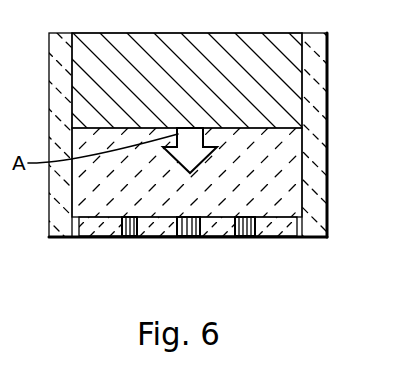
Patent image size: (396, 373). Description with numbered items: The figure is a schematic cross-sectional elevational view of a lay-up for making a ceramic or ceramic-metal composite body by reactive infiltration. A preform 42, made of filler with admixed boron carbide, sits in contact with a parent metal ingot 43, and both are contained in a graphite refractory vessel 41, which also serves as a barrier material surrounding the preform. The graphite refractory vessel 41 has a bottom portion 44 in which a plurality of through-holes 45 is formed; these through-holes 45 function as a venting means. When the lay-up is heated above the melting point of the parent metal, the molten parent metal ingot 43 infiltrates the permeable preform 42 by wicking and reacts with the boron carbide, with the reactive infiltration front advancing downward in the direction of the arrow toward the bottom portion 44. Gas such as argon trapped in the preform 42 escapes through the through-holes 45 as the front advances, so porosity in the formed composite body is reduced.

The graphite refractory vessel 41 is at (320, 68).
The preform 42 is at (286, 190).
The parent metal ingot 43 is at (216, 62).
The bottom portion 44 is at (158, 237).
The through-holes 45 is at (137, 237).